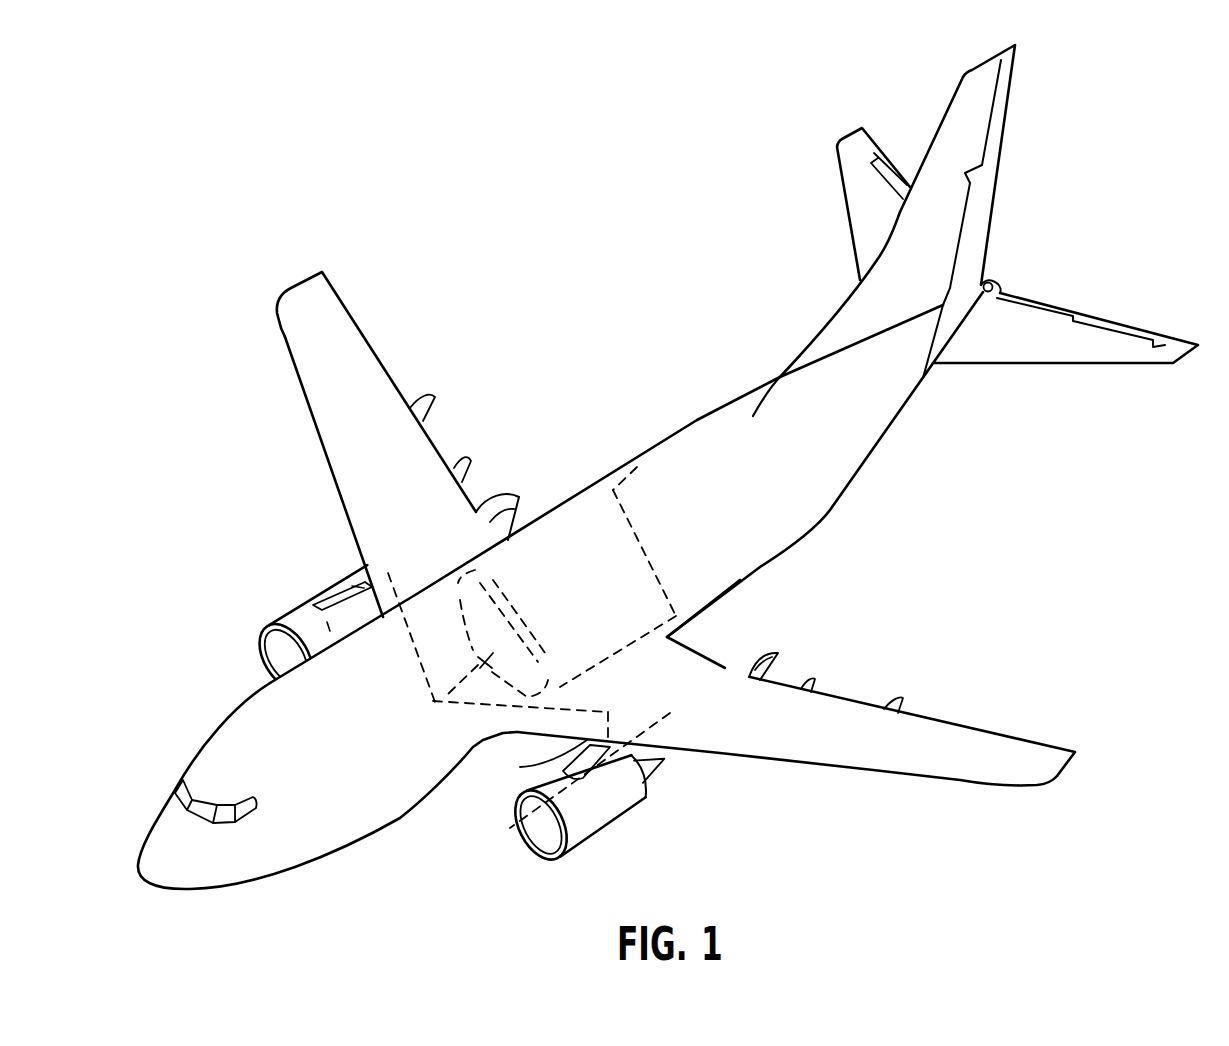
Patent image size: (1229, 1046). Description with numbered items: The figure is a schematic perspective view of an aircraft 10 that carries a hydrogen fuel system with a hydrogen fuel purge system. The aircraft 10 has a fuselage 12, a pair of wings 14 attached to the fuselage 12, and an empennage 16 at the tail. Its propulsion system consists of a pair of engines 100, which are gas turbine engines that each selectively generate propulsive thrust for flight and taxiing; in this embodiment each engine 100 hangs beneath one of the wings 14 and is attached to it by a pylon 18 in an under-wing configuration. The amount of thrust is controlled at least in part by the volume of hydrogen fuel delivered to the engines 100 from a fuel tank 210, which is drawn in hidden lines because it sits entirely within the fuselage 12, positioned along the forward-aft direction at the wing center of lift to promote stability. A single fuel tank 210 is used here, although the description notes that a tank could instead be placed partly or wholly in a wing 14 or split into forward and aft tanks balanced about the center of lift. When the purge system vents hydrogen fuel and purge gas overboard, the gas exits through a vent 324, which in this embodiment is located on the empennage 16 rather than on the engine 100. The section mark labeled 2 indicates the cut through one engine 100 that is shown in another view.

The aircraft 10 is at (292, 521).
The fuselage 12 is at (727, 548).
The wings 14 is at (291, 336).
The empennage 16 is at (1016, 201).
The pylon 18 is at (655, 757).
The engine 100 is at (630, 833).
The fuel tank 210 is at (637, 467).
The vent 324 is at (1002, 287).
The section line 2- 2 is at (670, 713).